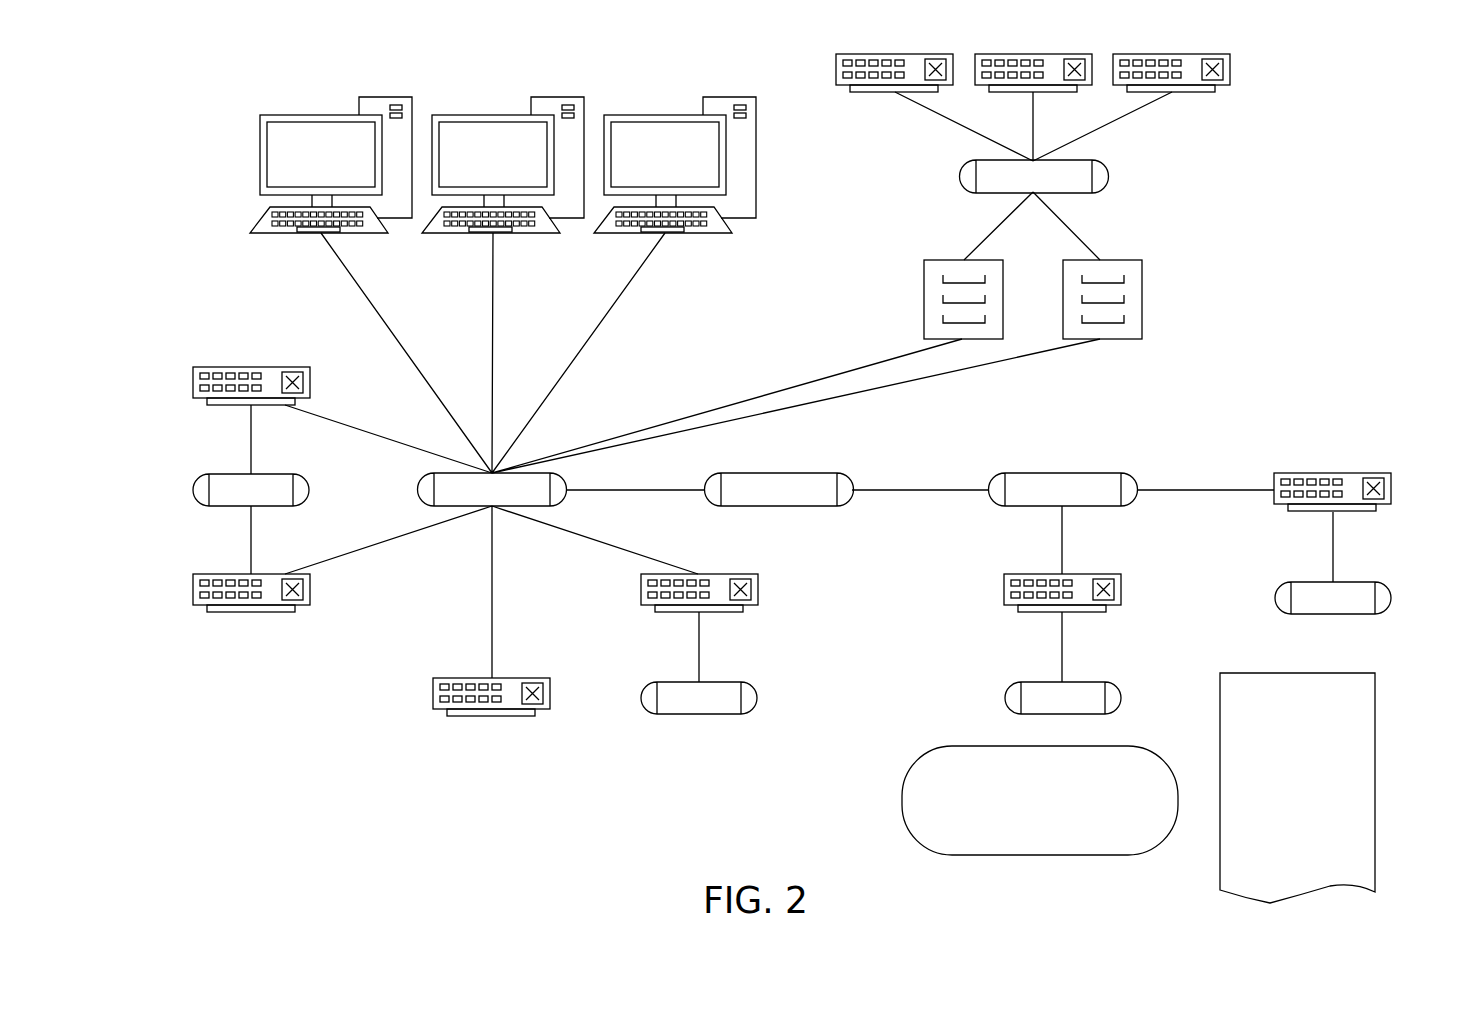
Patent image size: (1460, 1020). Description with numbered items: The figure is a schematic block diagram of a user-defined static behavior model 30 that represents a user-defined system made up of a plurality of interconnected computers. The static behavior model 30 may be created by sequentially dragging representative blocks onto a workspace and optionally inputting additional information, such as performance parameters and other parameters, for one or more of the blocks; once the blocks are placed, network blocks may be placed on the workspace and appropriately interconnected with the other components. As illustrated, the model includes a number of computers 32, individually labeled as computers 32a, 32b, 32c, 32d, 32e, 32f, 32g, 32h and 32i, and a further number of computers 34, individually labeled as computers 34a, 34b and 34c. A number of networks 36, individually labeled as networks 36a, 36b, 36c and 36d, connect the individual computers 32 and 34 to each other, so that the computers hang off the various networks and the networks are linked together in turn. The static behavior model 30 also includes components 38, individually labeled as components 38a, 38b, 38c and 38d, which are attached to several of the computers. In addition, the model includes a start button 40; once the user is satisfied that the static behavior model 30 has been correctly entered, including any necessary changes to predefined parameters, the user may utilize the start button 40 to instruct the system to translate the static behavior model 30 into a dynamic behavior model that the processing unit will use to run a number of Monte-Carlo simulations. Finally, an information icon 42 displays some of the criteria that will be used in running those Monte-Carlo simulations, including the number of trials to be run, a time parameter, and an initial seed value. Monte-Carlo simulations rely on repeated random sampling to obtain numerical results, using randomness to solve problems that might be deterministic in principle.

The user-defined static behavior model 30 is at (1265, 130).
The computers 32 is at (193, 655).
The computer 32a is at (240, 367).
The computer 32b is at (240, 574).
The computer 32c is at (460, 678).
The computer 32d is at (742, 574).
The computer 32e is at (1103, 574).
The computer 32f is at (1375, 473).
The computer 32g is at (895, 54).
The computer 32h is at (1033, 54).
The computer 32i is at (1172, 54).
The computers 34 is at (198, 120).
The computer 34a is at (321, 114).
The computer 34b is at (493, 114).
The computer 34c is at (665, 114).
The networks 36 is at (1265, 330).
The network 36a is at (560, 500).
The network 36b is at (822, 473).
The network 36c is at (1088, 473).
The network 36d is at (1085, 176).
The components 38 is at (168, 402).
The component 38a is at (240, 474).
The component 38b is at (722, 682).
The component 38c is at (1086, 682).
The component 38d is at (1358, 582).
The start button 40 is at (1040, 855).
The information icon 42 is at (1297, 673).